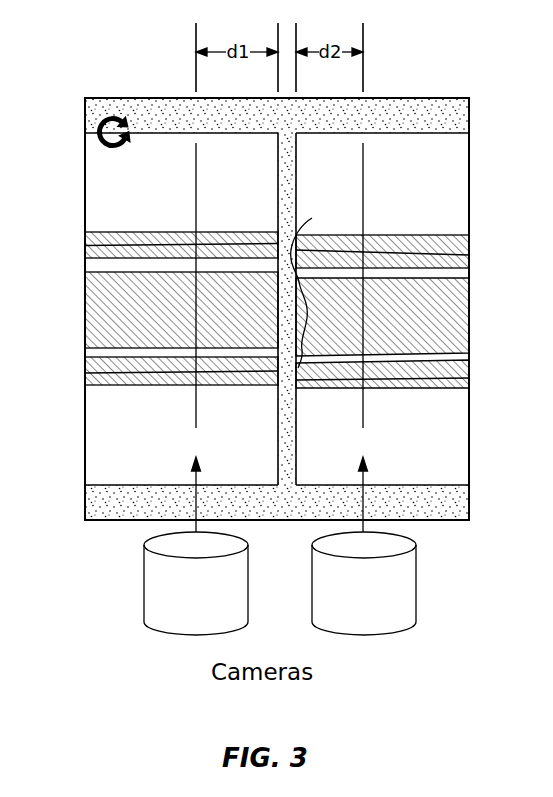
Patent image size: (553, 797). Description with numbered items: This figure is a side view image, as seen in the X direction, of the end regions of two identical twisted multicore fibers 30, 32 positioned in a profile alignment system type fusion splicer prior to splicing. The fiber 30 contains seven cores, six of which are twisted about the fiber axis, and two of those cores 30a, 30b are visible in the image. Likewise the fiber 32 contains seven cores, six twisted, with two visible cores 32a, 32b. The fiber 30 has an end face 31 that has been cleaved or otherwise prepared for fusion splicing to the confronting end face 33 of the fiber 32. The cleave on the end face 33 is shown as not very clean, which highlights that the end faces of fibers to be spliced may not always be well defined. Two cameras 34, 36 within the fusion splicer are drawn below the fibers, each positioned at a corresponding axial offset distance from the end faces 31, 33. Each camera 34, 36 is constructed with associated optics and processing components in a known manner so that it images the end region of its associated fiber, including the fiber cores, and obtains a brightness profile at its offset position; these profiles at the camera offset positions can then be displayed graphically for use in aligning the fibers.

The twisted multicore fiber 30 is at (160, 309).
The core 30a is at (162, 250).
The core 30b is at (168, 363).
The end face 31 is at (273, 333).
The twisted multicore fiber 32 is at (409, 309).
The core 32a is at (470, 262).
The core 32b is at (470, 375).
The end face 33 is at (313, 283).
The camera 34 is at (147, 590).
The camera 36 is at (417, 590).